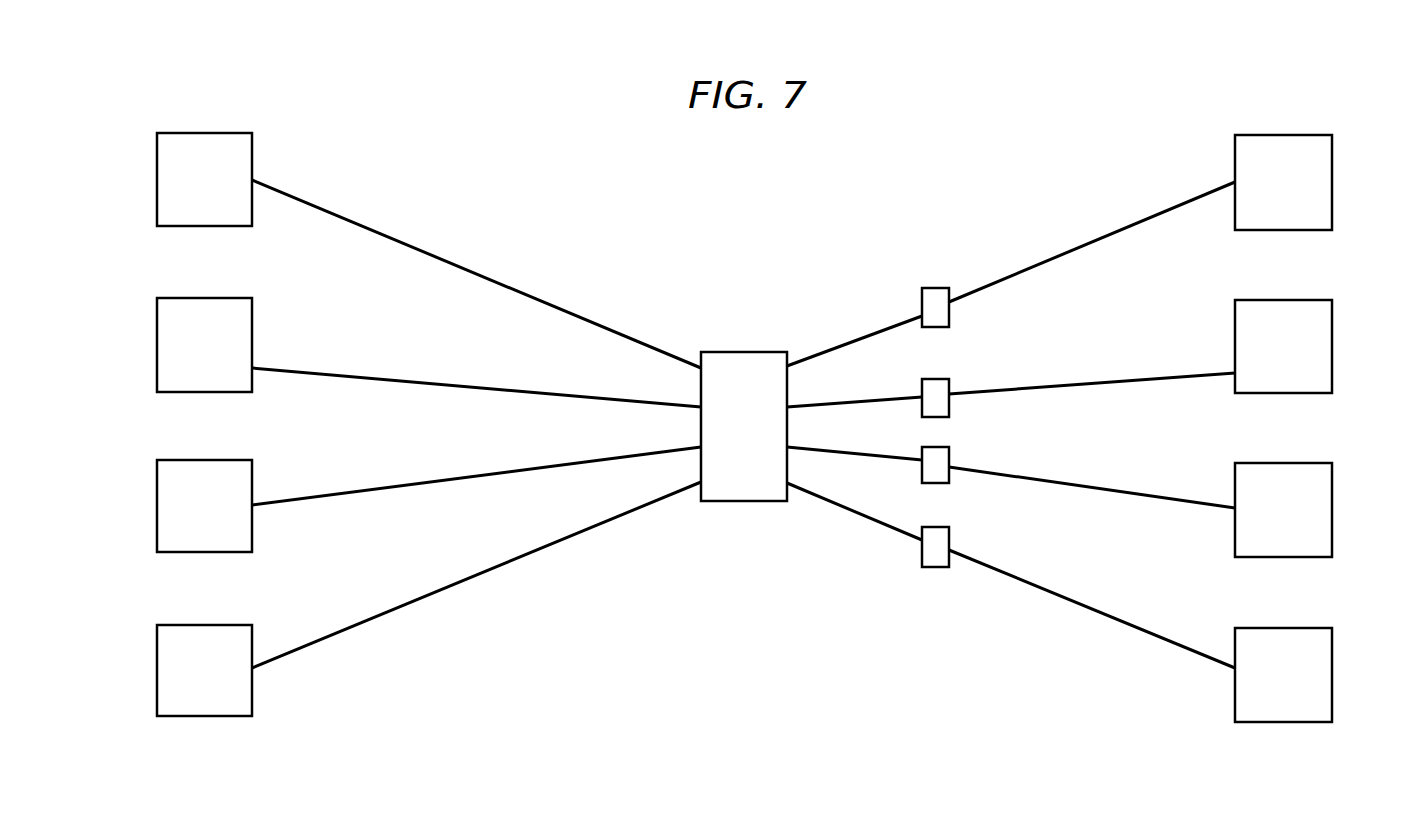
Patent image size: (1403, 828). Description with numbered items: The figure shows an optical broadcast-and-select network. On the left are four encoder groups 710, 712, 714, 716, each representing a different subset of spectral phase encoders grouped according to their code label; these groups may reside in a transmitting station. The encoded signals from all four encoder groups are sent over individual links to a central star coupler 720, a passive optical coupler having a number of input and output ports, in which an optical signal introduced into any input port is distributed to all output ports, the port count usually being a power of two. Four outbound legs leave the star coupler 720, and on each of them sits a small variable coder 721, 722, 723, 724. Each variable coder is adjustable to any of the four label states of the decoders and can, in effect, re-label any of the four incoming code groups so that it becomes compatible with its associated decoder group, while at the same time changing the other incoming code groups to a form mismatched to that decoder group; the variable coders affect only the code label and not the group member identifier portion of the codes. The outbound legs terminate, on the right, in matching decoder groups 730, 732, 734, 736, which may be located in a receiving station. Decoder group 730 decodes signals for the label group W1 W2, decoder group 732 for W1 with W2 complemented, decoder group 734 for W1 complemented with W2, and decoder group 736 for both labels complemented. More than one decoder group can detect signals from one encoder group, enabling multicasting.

The encoder group 710 is at (181, 133).
The encoder group 712 is at (157, 298).
The encoder group 714 is at (157, 465).
The encoder group 716 is at (157, 630).
The star coupler 720 is at (718, 352).
The variable coder 721 is at (933, 288).
The variable coder 722 is at (949, 383).
The variable coder 723 is at (949, 453).
The variable coder 724 is at (949, 548).
The decoder group 730 is at (1332, 160).
The decoder group 732 is at (1332, 330).
The decoder group 734 is at (1332, 490).
The decoder group 736 is at (1332, 658).